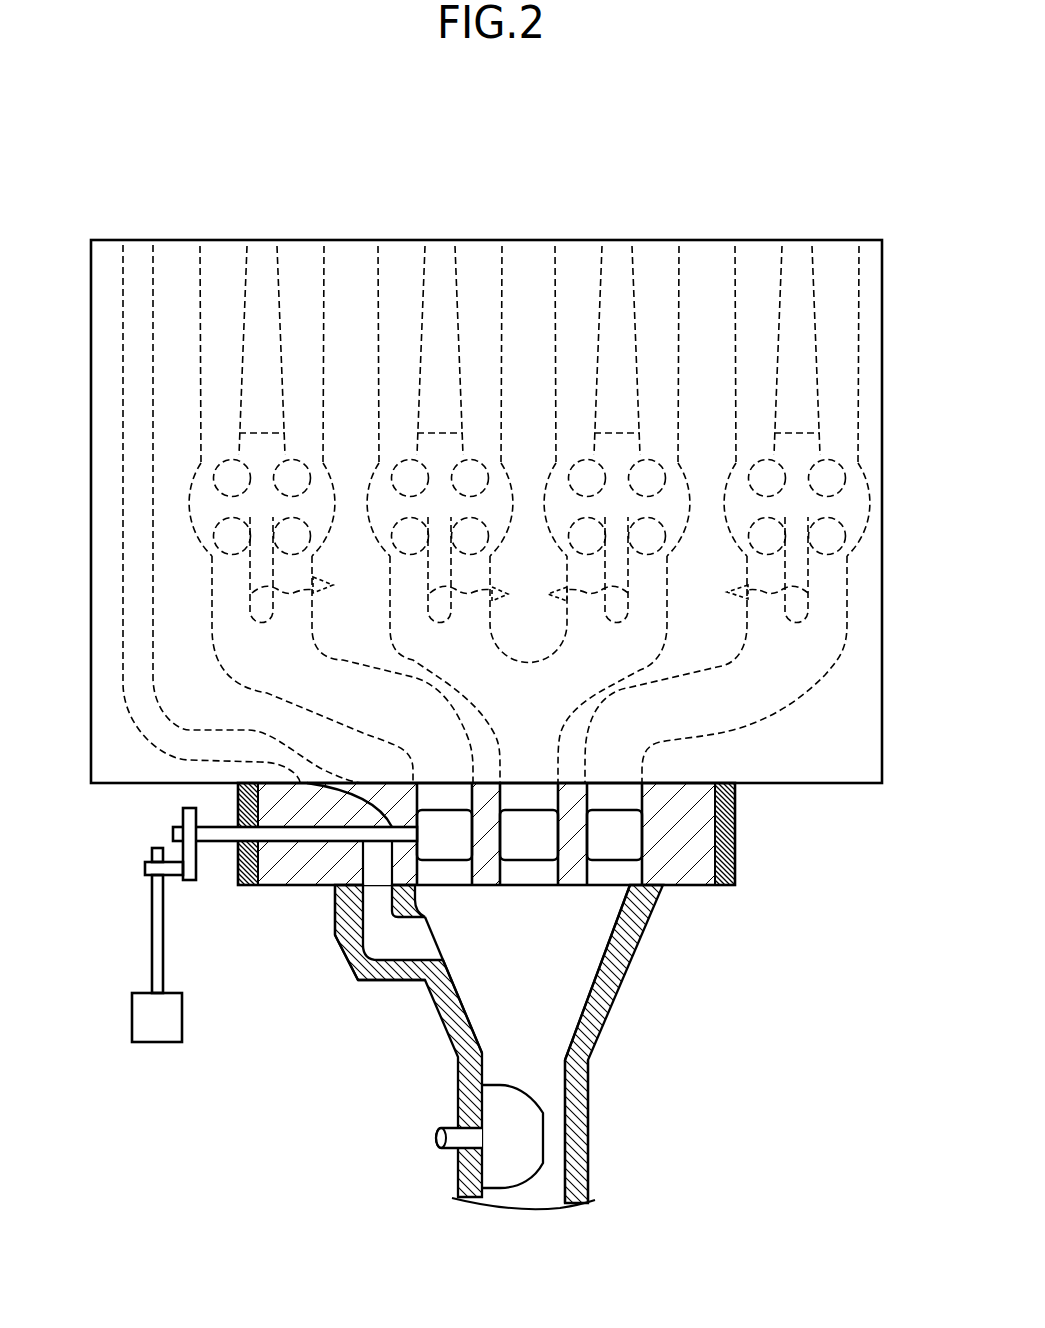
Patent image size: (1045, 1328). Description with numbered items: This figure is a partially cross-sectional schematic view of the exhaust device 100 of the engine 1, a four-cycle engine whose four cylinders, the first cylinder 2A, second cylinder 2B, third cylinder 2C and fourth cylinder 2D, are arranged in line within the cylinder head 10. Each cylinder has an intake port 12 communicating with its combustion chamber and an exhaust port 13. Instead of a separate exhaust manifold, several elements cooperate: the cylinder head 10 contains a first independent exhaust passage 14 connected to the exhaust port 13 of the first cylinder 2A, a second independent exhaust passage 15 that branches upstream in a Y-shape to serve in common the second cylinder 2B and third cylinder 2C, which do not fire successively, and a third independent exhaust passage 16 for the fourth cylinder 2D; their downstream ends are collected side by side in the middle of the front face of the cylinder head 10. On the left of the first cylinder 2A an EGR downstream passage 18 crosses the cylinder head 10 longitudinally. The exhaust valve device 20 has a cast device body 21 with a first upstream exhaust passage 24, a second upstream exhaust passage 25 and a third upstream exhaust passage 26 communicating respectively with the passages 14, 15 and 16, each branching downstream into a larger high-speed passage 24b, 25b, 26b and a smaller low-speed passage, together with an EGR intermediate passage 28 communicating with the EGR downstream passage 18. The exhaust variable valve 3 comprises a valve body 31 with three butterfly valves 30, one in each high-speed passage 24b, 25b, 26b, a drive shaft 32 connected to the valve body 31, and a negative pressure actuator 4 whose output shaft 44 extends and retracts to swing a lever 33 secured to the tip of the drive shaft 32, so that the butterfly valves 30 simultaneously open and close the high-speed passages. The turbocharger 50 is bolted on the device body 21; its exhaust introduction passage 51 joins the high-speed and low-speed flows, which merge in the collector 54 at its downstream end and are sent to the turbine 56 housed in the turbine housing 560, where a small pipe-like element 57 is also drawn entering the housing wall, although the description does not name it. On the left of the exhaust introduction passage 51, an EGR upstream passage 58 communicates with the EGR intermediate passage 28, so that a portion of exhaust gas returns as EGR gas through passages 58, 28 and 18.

The engine 1 is at (884, 606).
The first cylinder 2A is at (262, 528).
The second cylinder 2B is at (440, 528).
The third cylinder 2C is at (617, 528).
The fourth cylinder 2D is at (797, 528).
The exhaust variable valve 3 is at (229, 1029).
The negative pressure actuator 4 is at (145, 1020).
The cylinder head 10 is at (863, 757).
The intake port 12 is at (202, 245).
The exhaust port 13 is at (333, 585).
The first independent exhaust passage 14 is at (262, 650).
The second independent exhaust passage 15 is at (565, 682).
The third independent exhaust passage 16 is at (768, 679).
The EGR downstream passage 18 is at (123, 636).
The exhaust valve device 20 is at (537, 910).
The device body 21 is at (275, 886).
The first upstream exhaust passage 24 is at (529, 884).
The high-speed passage 24b is at (465, 882).
The second upstream exhaust passage 25 is at (622, 1017).
The high-speed passage 25b is at (550, 882).
The third upstream exhaust passage 26 is at (642, 1044).
The high-speed passage 26b is at (643, 928).
The EGR intermediate passage 28 is at (337, 938).
The butterfly valve 30 is at (527, 813).
The valve body 31 is at (653, 840).
The drive shaft 32 is at (327, 843).
The lever 33 is at (188, 882).
The output shaft 44 is at (152, 942).
The turbocharger 50 is at (549, 1158).
The exhaust introduction passage 51 is at (510, 1008).
The collector 54 is at (505, 1047).
The turbine 56 is at (522, 1153).
The inlet pipe 57 is at (450, 1140).
The EGR upstream passage 58 is at (400, 943).
The turbine housing 560 is at (585, 1171).
The exhaust device 100 is at (264, 1099).